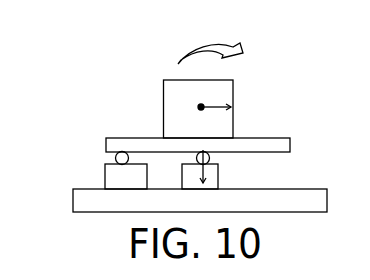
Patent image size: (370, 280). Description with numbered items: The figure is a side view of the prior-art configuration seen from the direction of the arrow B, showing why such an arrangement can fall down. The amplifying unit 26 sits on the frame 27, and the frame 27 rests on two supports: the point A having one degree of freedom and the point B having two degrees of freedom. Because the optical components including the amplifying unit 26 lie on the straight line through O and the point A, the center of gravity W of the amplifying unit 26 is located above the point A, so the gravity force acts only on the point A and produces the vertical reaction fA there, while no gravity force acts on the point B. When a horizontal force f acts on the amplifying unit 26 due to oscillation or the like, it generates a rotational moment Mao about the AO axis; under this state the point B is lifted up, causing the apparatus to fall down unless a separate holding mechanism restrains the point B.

The amplifying unit 26 is at (166, 83).
The frame 27 is at (106, 144).
The center of gravity W is at (192, 98).
The force f is at (217, 100).
The rotational moment Mao is at (217, 46).
The point A is at (194, 171).
The point B is at (117, 171).
The reaction force at point A fA is at (216, 166).